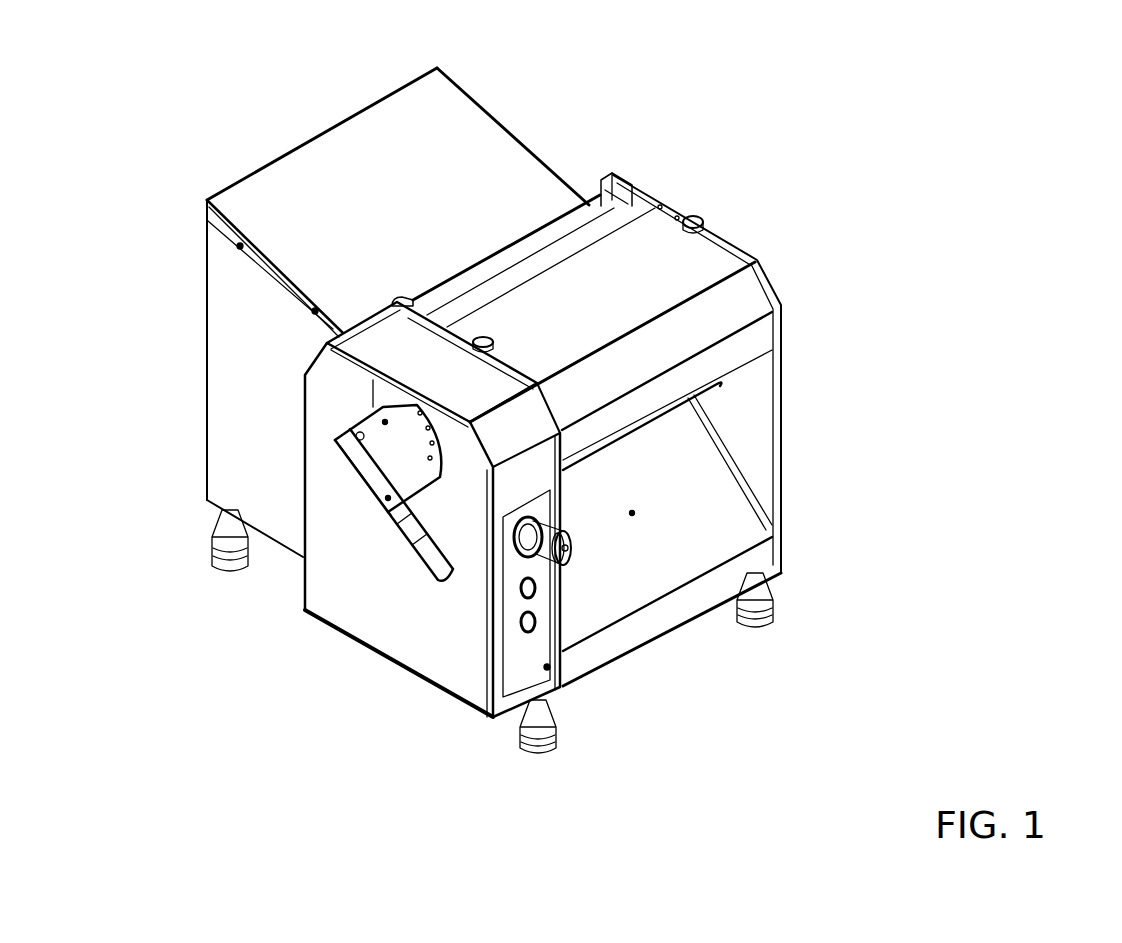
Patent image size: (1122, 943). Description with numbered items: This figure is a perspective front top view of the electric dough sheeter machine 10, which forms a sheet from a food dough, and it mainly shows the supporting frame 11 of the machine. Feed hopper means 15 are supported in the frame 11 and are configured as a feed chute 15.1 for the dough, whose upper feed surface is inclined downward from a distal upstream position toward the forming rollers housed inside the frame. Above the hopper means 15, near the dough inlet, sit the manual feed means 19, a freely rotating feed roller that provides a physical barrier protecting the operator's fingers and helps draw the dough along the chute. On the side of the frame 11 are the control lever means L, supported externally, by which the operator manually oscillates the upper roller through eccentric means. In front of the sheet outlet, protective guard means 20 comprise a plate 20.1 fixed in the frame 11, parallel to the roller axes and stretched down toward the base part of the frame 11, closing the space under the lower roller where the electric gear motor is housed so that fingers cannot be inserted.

The electric dough sheeter machine 10 is at (170, 256).
The supporting frame 11 is at (288, 560).
The feed hopper means 15 is at (334, 172).
The feed chute 15.1 is at (465, 135).
The manual feed means 19 is at (580, 205).
The protective guard means 20 is at (642, 573).
The plate 20.1 is at (661, 517).
The control lever means L is at (407, 547).